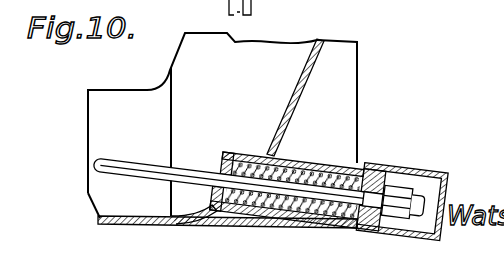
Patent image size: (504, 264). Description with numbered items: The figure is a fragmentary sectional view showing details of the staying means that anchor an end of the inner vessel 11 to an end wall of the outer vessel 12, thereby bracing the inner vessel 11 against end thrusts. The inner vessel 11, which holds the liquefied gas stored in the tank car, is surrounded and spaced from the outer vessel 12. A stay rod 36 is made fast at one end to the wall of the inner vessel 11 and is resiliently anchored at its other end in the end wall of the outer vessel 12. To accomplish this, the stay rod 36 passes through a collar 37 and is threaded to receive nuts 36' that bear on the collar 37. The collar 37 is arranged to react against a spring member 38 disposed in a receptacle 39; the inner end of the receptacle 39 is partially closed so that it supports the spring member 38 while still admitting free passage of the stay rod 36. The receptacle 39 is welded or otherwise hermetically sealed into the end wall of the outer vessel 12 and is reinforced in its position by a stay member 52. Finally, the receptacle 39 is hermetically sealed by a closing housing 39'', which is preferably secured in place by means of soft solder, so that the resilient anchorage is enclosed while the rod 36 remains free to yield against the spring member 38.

The inner vessel 11 is at (176, 62).
The outer vessel 12 is at (322, 53).
The stay rod 36 is at (229, 172).
The nuts 36' is at (438, 197).
The collar 37 is at (381, 167).
The spring member 38 is at (324, 160).
The receptacle 39 is at (287, 173).
The closing housing 39'' is at (418, 184).
The stay member 52 is at (267, 228).